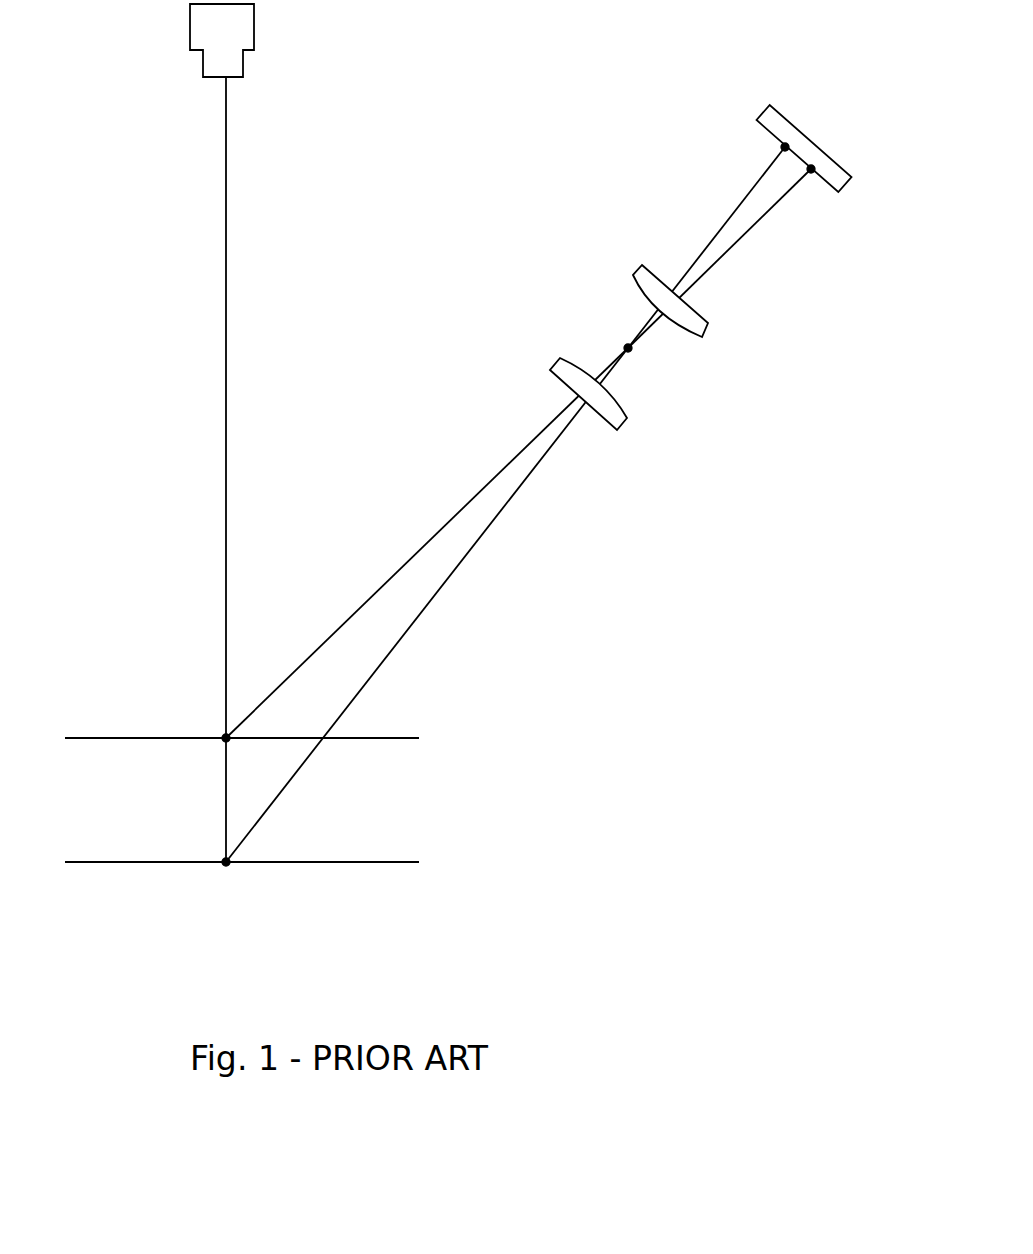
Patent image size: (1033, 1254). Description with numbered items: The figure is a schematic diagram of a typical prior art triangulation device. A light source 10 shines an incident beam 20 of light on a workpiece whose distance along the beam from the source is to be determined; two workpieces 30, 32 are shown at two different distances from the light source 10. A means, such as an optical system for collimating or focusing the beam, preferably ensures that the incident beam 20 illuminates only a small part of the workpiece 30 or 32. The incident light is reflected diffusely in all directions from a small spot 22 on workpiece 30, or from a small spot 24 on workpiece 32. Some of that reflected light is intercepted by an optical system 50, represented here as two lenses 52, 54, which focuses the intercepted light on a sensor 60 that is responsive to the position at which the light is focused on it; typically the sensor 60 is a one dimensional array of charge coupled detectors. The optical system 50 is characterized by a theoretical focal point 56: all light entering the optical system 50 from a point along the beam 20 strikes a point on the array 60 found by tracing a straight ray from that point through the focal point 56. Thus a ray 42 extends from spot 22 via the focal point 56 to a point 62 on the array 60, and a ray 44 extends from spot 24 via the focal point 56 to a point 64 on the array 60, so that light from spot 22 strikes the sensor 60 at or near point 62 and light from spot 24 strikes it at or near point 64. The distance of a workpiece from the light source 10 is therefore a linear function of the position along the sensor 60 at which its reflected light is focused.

The light source 10 is at (210, 43).
The incident beam 20 is at (230, 284).
The spot 22 is at (232, 866).
The spot 24 is at (225, 735).
The workpiece 30 is at (143, 860).
The workpiece 32 is at (120, 735).
The ray 42 is at (438, 598).
The ray 44 is at (397, 575).
The optical system 50 is at (668, 380).
The lens 52 is at (690, 323).
The lens 54 is at (612, 412).
The focal point 56 is at (622, 333).
The sensor 60 is at (845, 188).
The point 62 is at (781, 147).
The point 64 is at (813, 173).